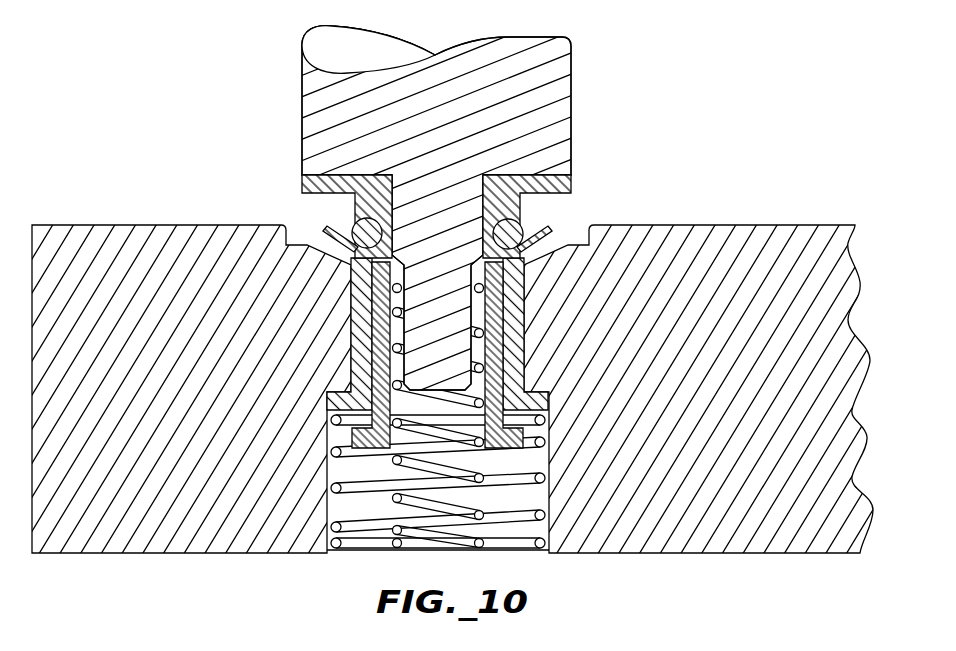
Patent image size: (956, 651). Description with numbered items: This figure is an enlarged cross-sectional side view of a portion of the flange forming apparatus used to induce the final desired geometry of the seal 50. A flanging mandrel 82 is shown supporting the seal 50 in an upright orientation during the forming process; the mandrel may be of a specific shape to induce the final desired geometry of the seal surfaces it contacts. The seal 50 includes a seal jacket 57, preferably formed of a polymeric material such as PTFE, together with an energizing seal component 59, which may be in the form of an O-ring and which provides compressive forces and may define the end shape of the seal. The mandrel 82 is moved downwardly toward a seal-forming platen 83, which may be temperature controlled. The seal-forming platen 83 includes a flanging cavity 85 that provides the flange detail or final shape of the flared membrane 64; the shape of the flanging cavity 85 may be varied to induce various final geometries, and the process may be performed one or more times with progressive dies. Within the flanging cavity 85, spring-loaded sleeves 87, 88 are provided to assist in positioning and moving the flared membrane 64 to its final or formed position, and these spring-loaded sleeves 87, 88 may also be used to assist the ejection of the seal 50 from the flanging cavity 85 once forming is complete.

The seal 50 is at (452, 202).
The seal jacket 57 is at (352, 208).
The energizing seal component 59 is at (343, 213).
The flared membrane 64 is at (521, 221).
The flanging mandrel 82 is at (320, 128).
The seal-forming platen 83 is at (704, 237).
The flanging cavity 85 is at (549, 227).
The spring-loaded sleeve 87 is at (525, 355).
The spring-loaded sleeve 88 is at (496, 432).